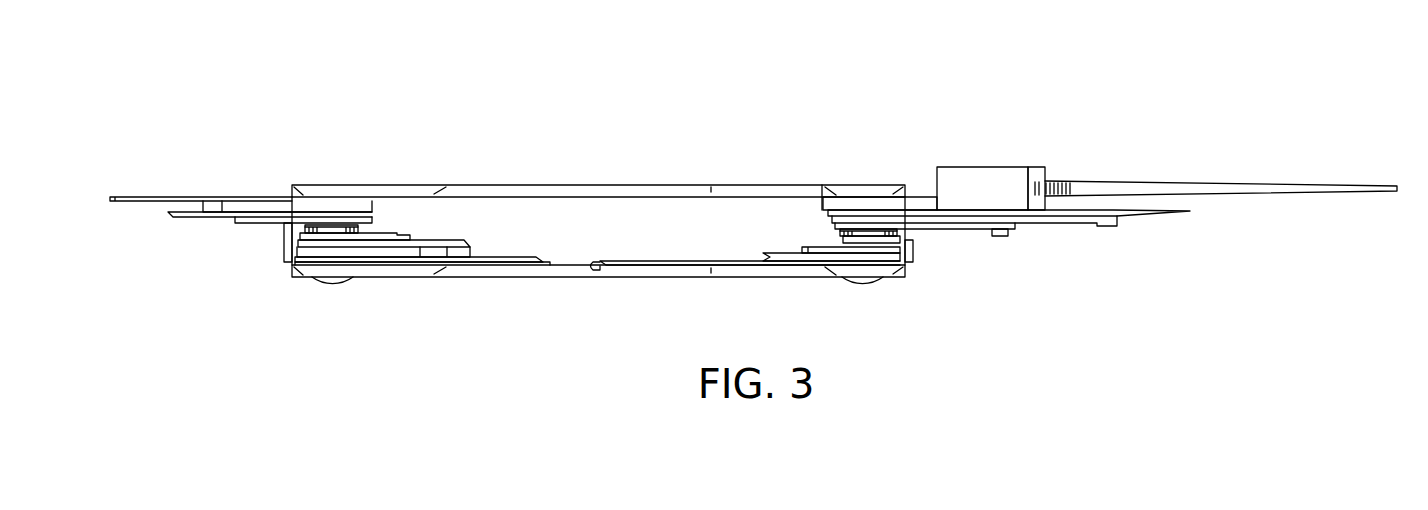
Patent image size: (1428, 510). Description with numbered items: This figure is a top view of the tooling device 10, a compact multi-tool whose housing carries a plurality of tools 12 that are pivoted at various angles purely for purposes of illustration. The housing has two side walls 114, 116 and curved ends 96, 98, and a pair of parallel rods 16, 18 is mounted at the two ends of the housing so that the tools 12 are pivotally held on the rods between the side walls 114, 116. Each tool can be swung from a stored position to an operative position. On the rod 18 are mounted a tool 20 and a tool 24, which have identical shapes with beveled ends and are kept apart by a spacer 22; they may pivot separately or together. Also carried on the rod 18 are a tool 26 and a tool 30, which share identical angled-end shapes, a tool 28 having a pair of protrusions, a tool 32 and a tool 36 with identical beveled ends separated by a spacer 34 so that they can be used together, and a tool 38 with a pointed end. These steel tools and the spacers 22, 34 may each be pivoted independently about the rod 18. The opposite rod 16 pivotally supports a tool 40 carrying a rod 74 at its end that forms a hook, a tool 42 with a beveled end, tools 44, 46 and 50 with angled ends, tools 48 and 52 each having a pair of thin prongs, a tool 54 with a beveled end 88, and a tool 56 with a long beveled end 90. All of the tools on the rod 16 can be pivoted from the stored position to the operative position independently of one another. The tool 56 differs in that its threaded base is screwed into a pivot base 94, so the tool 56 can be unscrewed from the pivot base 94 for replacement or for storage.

The tooling device 10 is at (829, 76).
The tools 12 is at (1104, 130).
The rod 16 is at (330, 282).
The rod 18 is at (870, 282).
The tool 20 is at (122, 197).
The spacer 22 is at (238, 206).
The tool 24 is at (184, 215).
The tool 26 is at (246, 221).
The tool 28 is at (360, 232).
The tool 30 is at (388, 238).
The tool 32 is at (443, 243).
The spacer 34 is at (413, 254).
The tool 36 is at (506, 257).
The tool 38 is at (528, 264).
The tool 40 is at (672, 264).
The tool 42 is at (782, 257).
The tool 44 is at (817, 250).
The tool 46 is at (863, 243).
The tool 48 is at (995, 237).
The tool 50 is at (1016, 229).
The tool 52 is at (1083, 223).
The tool 54 is at (1098, 212).
The tool 56 is at (1210, 185).
The rod 74 is at (592, 264).
The beveled end 88 is at (1175, 217).
The long beveled end 90 is at (1397, 187).
The pivot base 94 is at (984, 177).
The curved end 96 is at (284, 246).
The curved end 98 is at (916, 252).
The side wall 114 is at (591, 191).
The side wall 116 is at (562, 270).